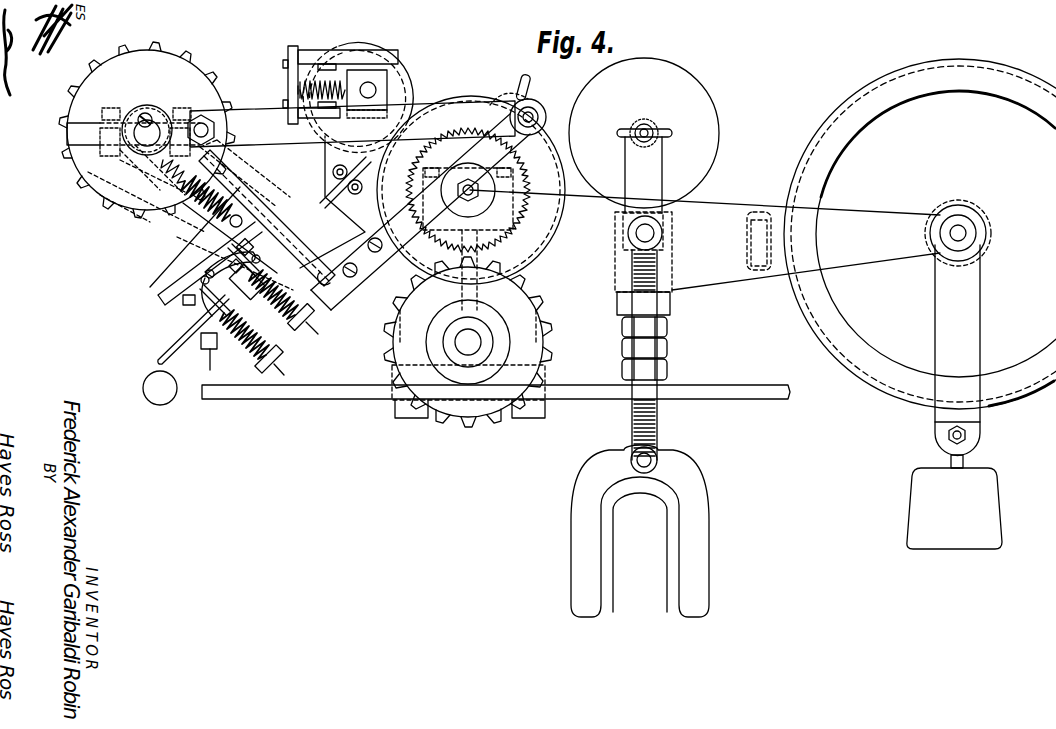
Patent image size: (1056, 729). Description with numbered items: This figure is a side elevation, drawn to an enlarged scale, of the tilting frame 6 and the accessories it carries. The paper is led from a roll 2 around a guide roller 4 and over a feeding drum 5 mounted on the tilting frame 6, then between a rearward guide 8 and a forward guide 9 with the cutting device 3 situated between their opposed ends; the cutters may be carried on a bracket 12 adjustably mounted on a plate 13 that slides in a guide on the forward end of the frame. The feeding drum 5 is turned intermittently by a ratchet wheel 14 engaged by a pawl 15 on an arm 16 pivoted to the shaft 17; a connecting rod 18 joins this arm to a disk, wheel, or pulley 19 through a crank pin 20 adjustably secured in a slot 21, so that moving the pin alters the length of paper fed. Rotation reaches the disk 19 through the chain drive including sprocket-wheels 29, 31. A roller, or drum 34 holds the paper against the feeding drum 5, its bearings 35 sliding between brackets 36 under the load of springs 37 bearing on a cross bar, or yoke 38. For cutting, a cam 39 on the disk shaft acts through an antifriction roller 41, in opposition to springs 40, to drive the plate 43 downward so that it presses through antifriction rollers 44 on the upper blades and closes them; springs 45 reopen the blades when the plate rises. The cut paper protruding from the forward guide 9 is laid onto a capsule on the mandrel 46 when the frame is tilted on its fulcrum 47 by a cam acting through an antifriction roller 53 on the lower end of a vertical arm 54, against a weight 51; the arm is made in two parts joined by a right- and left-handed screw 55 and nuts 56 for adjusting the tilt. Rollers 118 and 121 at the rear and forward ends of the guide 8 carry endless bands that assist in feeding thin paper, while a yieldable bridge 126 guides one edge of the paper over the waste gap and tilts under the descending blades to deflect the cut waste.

The roll 2 is at (710, 125).
The cutting device 3 is at (256, 220).
The guide roller 4 is at (920, 234).
The feeding drum 5 is at (471, 190).
The tilting frame 6 is at (705, 240).
The rearward guide 8 is at (325, 190).
The forward guide 9 is at (185, 328).
The bracket 12 is at (244, 251).
The plate 13 is at (214, 359).
The ratchet wheel 14 is at (500, 240).
The pawl 15 is at (495, 95).
The arm 16 is at (468, 219).
The shaft 17 is at (485, 192).
The connecting rod 18 is at (352, 124).
The disk, wheel, or pulley 19 is at (147, 130).
The crank pin 20 is at (200, 120).
The slot 21 is at (72, 135).
The sprocket-wheel 29 is at (452, 422).
The sprocket-wheel 31 is at (87, 72).
The roller, or drum 34 is at (400, 78).
The bearings 35 is at (355, 77).
The brackets 36 is at (310, 54).
The springs 37 is at (298, 89).
The cross bar, or yoke 38 is at (290, 77).
The cam 39 is at (100, 170).
The springs 40 is at (180, 222).
The antifriction roller 41 is at (130, 205).
The plate 43 is at (180, 289).
The antifriction rollers 44 is at (210, 270).
The springs 45 is at (295, 312).
The mandrel 46 is at (155, 392).
The fulcrum 47 is at (468, 342).
The weight 51 is at (954, 397).
The antifriction roller 53 is at (659, 458).
The vertical arm 54 is at (588, 488).
The right- and left-handed screw 55 is at (670, 300).
The nuts 56 is at (660, 368).
The roller 118 is at (346, 253).
The roller 121 is at (340, 165).
The yieldable bridge 126 is at (215, 292).